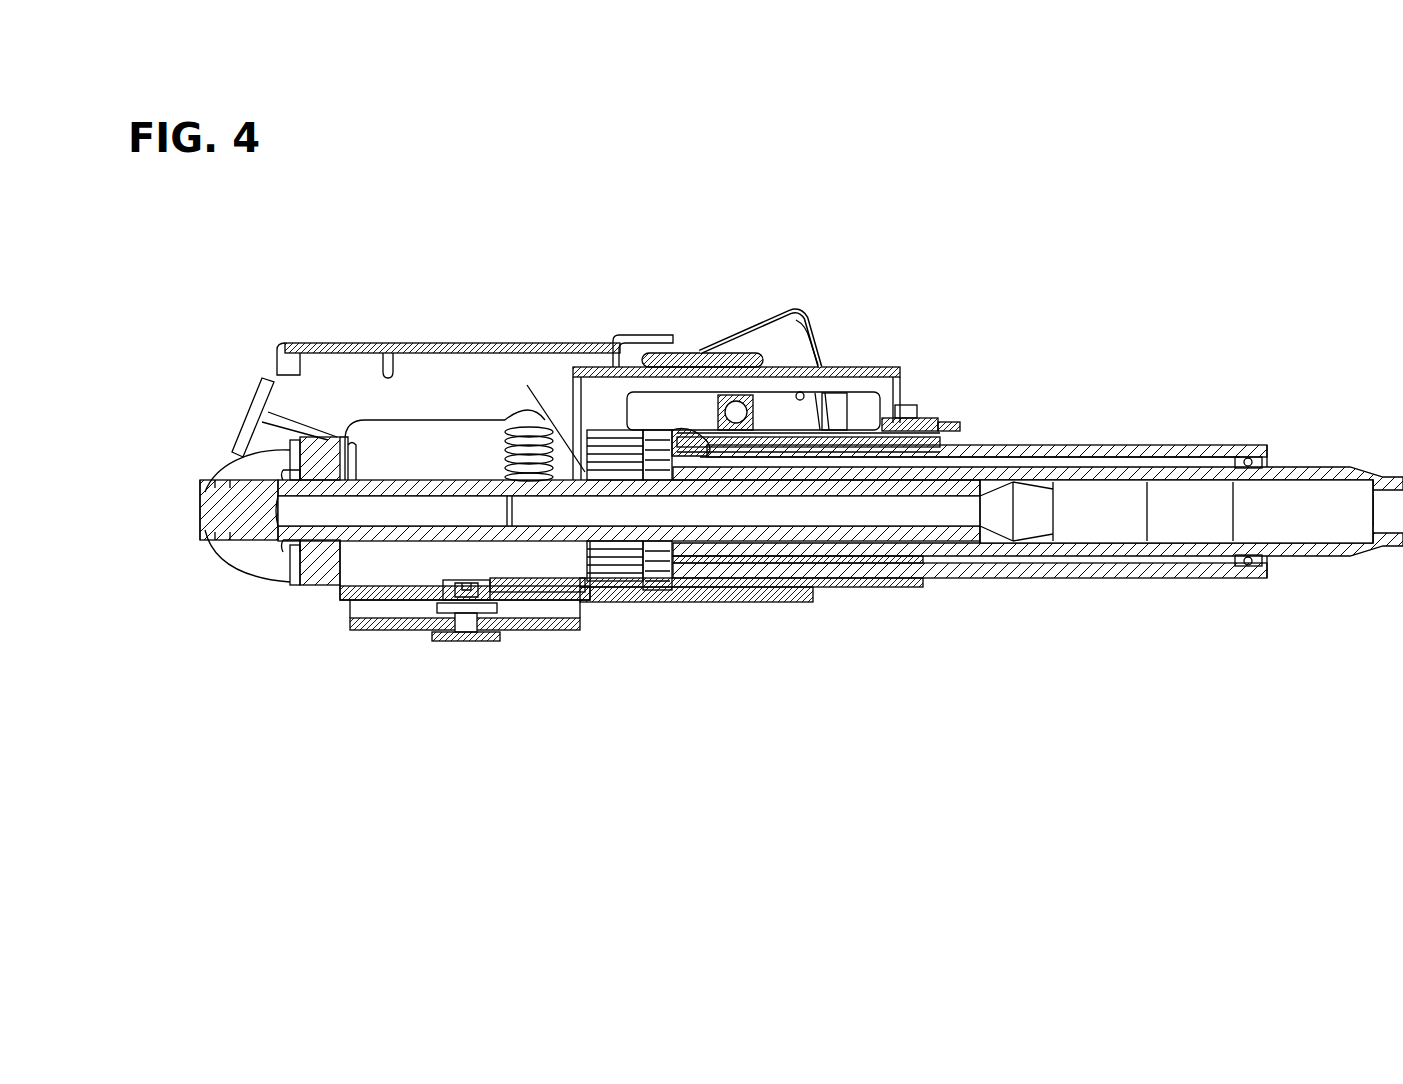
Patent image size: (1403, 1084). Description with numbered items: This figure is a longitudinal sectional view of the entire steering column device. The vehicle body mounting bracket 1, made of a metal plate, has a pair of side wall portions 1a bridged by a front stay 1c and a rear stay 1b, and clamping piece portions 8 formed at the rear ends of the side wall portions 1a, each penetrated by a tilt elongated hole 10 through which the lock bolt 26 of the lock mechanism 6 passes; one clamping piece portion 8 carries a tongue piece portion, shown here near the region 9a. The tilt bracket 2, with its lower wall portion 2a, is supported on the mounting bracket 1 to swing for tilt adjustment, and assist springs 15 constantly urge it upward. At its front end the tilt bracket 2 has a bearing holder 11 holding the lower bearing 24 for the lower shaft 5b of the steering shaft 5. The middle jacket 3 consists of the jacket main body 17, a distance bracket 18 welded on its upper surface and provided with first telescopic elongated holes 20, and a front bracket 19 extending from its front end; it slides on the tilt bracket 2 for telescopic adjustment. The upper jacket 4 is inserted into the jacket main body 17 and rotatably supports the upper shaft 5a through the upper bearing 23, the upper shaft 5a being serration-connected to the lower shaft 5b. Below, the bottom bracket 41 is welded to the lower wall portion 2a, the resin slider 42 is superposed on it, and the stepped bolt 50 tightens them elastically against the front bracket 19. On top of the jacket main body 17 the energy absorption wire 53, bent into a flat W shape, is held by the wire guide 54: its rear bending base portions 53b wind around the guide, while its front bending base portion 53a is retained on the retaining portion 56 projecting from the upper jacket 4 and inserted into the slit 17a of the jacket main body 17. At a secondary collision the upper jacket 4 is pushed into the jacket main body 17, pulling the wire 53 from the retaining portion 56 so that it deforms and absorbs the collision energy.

The vehicle body mounting bracket 1 is at (622, 335).
The side wall portion 1a is at (512, 368).
The rear stay 1b is at (782, 340).
The front stay 1c is at (340, 338).
The tilt bracket 2 is at (390, 600).
The lower wall portion 2a is at (780, 602).
The middle jacket 3 is at (890, 598).
The upper jacket 4 is at (1143, 592).
The steering shaft 5 is at (801, 569).
The upper shaft 5a is at (1318, 558).
The lower shaft 5b is at (622, 545).
The lock mechanism 6 is at (735, 392).
The clamping piece portion 8 is at (773, 348).
The tab 9a is at (678, 352).
The tilt elongated hole 10 is at (800, 313).
The bearing holder 11 is at (297, 582).
The assist spring 15 is at (503, 428).
The jacket main body 17 is at (832, 590).
The slit 17a is at (600, 410).
The distance bracket 18 is at (880, 396).
The front bracket 19 is at (550, 572).
The first telescopic elongated hole 20 is at (815, 395).
The upper bearing 23 is at (1244, 452).
The lower bearing 24 is at (325, 585).
The lock bolt 26 is at (739, 342).
The bottom bracket 41 is at (405, 630).
The slider 42 is at (500, 613).
The bolt 50 is at (462, 640).
The energy absorption wire 53 is at (868, 405).
The front bending base portion 53a is at (650, 430).
The rear bending base portion 53b is at (955, 427).
The wire guide 54 is at (950, 404).
The retaining portion 56 is at (612, 345).